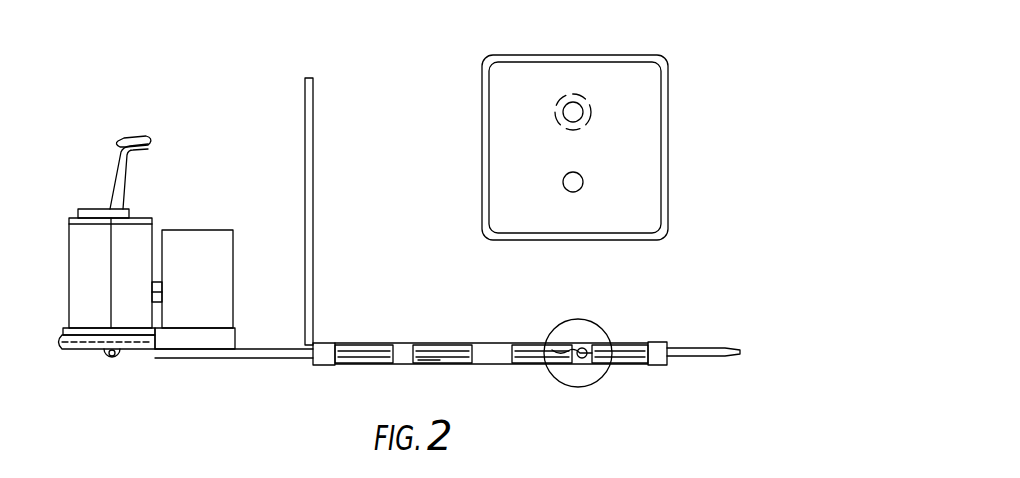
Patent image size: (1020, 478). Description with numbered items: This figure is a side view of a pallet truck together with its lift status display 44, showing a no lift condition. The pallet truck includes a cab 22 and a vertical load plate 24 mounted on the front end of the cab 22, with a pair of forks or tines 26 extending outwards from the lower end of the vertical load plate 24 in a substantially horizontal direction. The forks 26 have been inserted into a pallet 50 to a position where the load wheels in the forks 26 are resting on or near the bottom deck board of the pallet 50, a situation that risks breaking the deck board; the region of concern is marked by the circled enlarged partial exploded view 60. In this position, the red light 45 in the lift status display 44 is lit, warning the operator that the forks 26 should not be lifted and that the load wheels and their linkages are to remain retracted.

The cab 22 is at (68, 258).
The vertical load plate 24 is at (315, 213).
The forks or tines 26 is at (725, 348).
The lift status display 44 is at (668, 69).
The red light 45 is at (586, 117).
The pallet 50 is at (660, 342).
The enlarged partial exploded view 60 is at (608, 377).